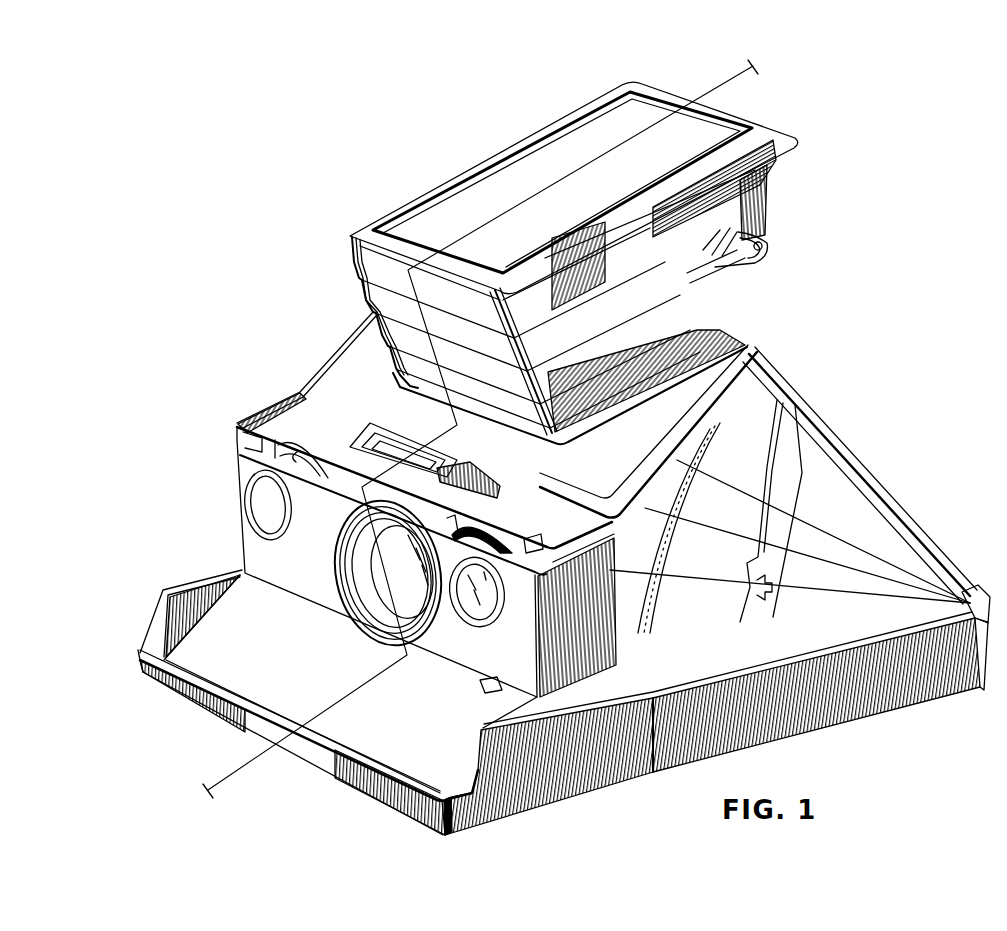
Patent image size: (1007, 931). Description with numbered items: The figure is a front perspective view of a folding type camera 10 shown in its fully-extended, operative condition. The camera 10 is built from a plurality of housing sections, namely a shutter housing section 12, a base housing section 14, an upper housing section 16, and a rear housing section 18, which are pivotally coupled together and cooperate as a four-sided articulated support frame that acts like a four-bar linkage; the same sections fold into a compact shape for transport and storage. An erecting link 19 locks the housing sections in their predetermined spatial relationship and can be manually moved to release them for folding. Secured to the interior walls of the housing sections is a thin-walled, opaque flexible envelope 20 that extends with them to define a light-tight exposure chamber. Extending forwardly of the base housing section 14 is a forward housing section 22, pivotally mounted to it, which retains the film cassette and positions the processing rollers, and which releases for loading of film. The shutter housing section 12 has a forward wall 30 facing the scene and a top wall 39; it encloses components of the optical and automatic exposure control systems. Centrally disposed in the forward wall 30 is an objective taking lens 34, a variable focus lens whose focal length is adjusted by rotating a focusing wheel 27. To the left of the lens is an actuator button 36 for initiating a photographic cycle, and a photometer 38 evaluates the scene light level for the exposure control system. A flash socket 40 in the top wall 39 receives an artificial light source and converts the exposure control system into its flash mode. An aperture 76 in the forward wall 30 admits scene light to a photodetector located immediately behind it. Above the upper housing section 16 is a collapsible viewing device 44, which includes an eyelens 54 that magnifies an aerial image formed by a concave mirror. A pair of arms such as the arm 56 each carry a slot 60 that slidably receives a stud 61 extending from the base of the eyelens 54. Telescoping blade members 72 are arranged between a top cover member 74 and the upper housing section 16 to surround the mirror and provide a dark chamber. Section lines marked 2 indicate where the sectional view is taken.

The section line 2- 2 is at (716, 54).
The camera 10 is at (564, 562).
The shutter housing section 12 is at (476, 520).
The base housing section 14 is at (563, 704).
The upper housing section 16 is at (497, 443).
The rear housing section 18 is at (850, 446).
The erecting link 19 is at (768, 468).
The flexible envelope 20 is at (845, 502).
The forward housing section 22 is at (546, 806).
The focusing wheel 27 is at (297, 445).
The forward wall 30 is at (237, 545).
The objective taking lens 34 is at (378, 570).
The actuator button 36 is at (258, 495).
The photometer 38 is at (486, 586).
The top wall 39 is at (283, 402).
The flash socket 40 is at (372, 433).
The collapsible viewing device 44 is at (578, 195).
The eyelens 54 is at (768, 200).
The arm 56 is at (749, 249).
The slot 60 is at (720, 266).
The stud 61 is at (762, 243).
The telescoping blade members 72 is at (355, 292).
The top cover member 74 is at (420, 194).
The aperture 76 is at (531, 539).